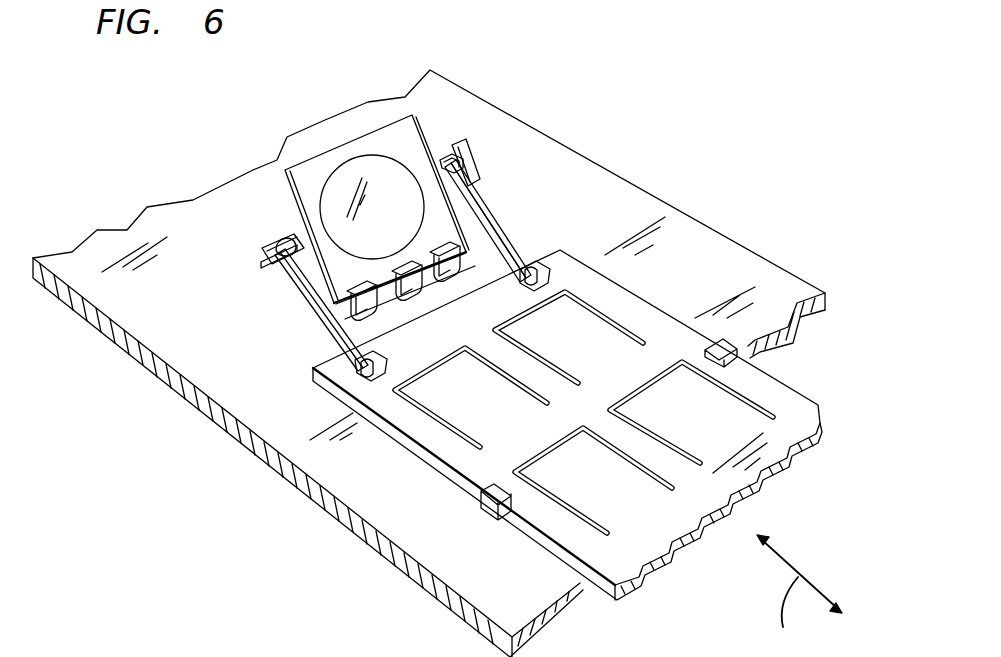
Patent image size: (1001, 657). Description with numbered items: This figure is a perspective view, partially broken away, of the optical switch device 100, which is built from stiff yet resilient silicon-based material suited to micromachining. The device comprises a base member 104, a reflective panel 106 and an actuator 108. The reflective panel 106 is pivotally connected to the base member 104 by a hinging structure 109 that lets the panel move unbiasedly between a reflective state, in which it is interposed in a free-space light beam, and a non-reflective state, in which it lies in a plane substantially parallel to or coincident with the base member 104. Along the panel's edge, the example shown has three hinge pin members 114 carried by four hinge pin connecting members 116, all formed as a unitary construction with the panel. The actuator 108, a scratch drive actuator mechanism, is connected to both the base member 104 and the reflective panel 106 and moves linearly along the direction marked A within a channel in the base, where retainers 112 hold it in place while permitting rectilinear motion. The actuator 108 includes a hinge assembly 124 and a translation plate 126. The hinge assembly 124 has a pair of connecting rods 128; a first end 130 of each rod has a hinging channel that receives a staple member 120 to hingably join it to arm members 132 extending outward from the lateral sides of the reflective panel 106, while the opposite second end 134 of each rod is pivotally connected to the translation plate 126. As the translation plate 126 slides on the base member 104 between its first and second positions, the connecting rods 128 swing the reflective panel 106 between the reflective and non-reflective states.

The optical switch device 100 is at (364, 92).
The base member 104 is at (718, 243).
The reflective panel 106 is at (367, 167).
The actuator 108 is at (791, 404).
The hinging structure 109 is at (470, 268).
The retainers 112 is at (739, 354).
The hinge pin member 114 is at (405, 296).
The hinge pin connecting members 116 is at (418, 288).
The staple member 120 is at (290, 228).
The hinge assembly 124 is at (516, 237).
The translation plate 126 is at (643, 540).
The connecting rods 128 is at (489, 216).
The first end 130 is at (468, 180).
The arm members 132 is at (470, 143).
The second end 134 is at (551, 260).